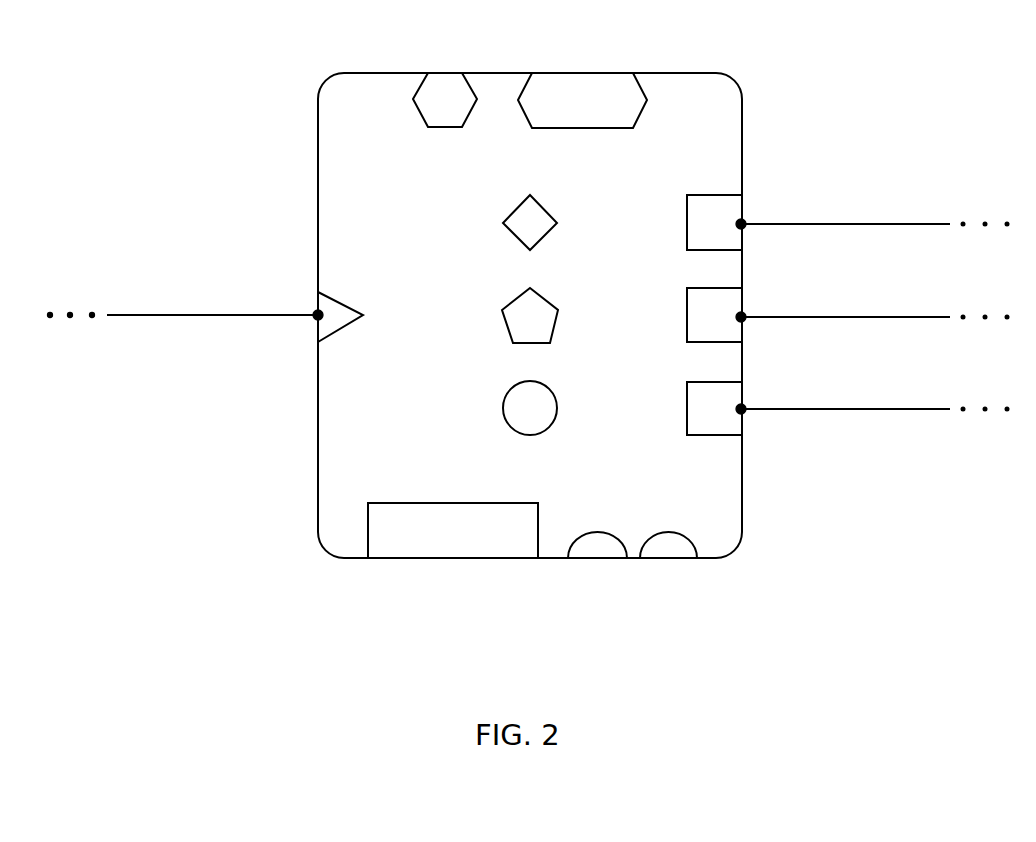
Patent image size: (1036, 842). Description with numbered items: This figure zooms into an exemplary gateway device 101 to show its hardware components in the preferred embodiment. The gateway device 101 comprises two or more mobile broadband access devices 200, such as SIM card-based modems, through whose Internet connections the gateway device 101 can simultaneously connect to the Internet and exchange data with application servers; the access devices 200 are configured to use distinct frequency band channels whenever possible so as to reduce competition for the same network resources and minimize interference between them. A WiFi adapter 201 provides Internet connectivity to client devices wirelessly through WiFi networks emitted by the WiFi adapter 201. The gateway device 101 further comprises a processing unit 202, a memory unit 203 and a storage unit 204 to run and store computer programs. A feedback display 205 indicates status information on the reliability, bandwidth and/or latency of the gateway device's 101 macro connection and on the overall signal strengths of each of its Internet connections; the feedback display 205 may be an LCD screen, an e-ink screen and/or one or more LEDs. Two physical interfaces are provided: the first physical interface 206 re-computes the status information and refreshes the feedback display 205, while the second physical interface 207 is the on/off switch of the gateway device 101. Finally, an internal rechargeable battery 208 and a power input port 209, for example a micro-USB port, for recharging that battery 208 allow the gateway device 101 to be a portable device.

The gateway device 101 is at (318, 528).
The access devices 200 is at (713, 195).
The WiFi adapter 201 is at (363, 315).
The processing unit 202 is at (557, 223).
The memory unit 203 is at (502, 310).
The storage unit 204 is at (557, 406).
The feedback display 205 is at (447, 503).
The first physical interface 206 is at (570, 550).
The second physical interface 207 is at (695, 552).
The rechargeable battery 208 is at (647, 100).
The power input port 209 is at (413, 99).